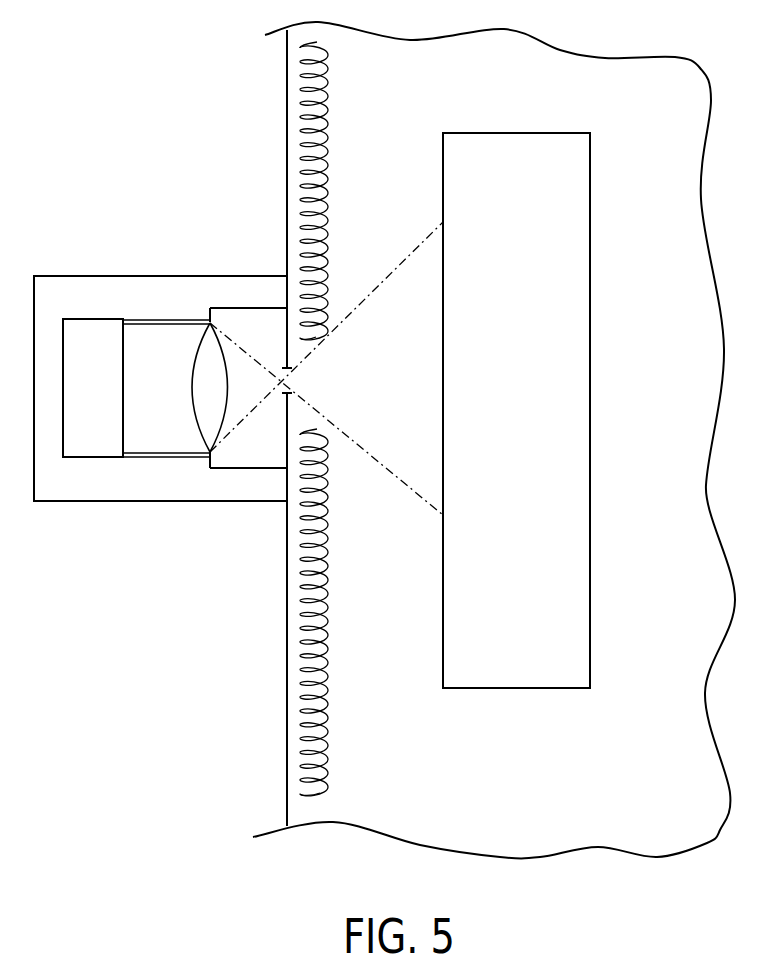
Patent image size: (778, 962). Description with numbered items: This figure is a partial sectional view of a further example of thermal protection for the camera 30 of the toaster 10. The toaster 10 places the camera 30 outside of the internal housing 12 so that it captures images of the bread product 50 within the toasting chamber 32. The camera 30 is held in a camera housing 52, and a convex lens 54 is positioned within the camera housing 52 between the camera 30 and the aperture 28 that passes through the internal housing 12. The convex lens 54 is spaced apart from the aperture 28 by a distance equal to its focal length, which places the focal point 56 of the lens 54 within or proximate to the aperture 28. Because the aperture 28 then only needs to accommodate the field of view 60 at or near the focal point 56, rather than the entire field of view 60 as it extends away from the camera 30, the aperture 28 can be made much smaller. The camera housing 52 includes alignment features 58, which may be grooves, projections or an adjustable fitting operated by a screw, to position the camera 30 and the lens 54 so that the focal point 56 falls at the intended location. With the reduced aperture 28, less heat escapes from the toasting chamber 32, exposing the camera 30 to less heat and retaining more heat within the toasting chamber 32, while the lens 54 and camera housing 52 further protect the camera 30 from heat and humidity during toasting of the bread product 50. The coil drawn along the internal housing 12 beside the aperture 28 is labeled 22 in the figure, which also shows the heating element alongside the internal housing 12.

The toaster 10 is at (170, 85).
The internal housing 12 is at (287, 113).
The coil / winding 22 is at (323, 597).
The aperture 28 is at (303, 375).
The camera 30 is at (79, 400).
The toasting chamber 32 is at (627, 370).
The bread product 50 is at (502, 428).
The camera housing 52 is at (112, 293).
The convex lens 54 is at (202, 366).
The focal point 56 is at (269, 412).
The alignment features 58 is at (155, 320).
The field of view 60 is at (371, 395).